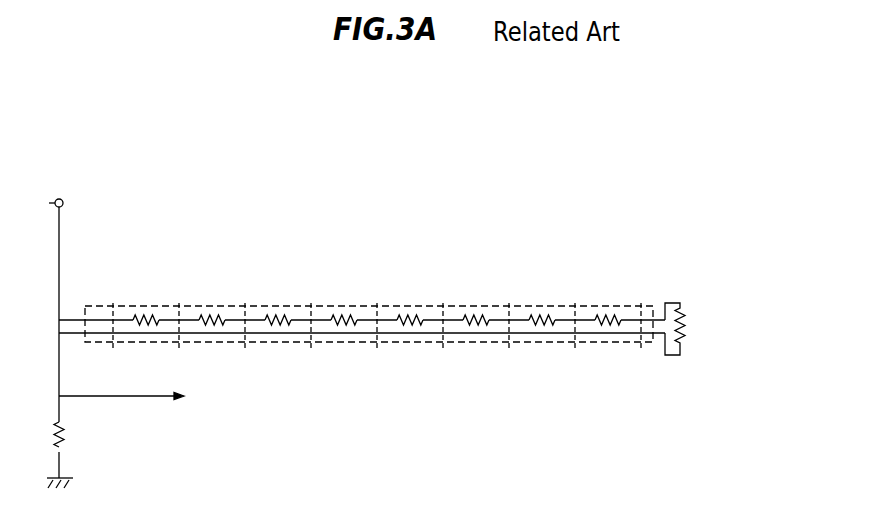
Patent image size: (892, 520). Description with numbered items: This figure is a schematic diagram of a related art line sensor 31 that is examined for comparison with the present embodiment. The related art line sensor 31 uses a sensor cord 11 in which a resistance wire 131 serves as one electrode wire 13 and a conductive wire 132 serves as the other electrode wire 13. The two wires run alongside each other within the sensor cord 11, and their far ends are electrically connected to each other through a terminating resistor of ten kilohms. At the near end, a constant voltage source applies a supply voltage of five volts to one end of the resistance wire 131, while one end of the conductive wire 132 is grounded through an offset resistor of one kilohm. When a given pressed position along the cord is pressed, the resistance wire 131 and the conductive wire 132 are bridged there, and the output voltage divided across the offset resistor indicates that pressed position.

The related art line sensor 31 is at (207, 184).
The sensor cord 11 is at (625, 302).
The electrode wire 13 is at (646, 330).
The resistance wire 131 is at (260, 321).
The conductive wire 132 is at (345, 334).